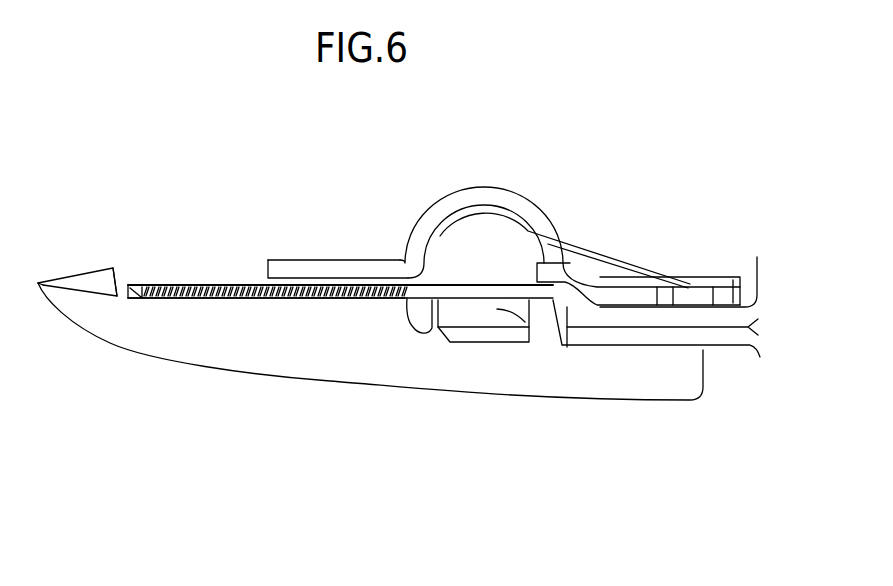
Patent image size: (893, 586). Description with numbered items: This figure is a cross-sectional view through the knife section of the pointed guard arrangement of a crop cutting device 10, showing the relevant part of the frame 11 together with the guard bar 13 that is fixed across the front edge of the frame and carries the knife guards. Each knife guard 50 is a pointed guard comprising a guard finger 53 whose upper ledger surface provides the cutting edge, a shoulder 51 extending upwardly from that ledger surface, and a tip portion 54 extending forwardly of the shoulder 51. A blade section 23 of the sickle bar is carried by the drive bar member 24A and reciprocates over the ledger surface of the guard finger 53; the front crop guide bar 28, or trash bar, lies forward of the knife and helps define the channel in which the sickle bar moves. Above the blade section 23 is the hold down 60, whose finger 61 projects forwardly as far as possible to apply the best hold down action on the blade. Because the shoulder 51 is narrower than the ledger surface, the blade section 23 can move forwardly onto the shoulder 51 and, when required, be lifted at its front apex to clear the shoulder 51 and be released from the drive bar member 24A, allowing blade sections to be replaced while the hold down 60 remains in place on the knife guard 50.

The crop cutting device 10 is at (558, 160).
The frame 11 is at (757, 247).
The guard bar 13 is at (633, 337).
The blade section 23 is at (247, 300).
The drive bar member 24A is at (530, 330).
The front crop guide bar 28 is at (413, 317).
The knife guard 50 is at (435, 372).
The shoulder 51 is at (118, 282).
The guard finger 53 is at (180, 303).
The tip portion 54 is at (98, 263).
The hold down 60 is at (509, 176).
The finger 61 is at (383, 257).